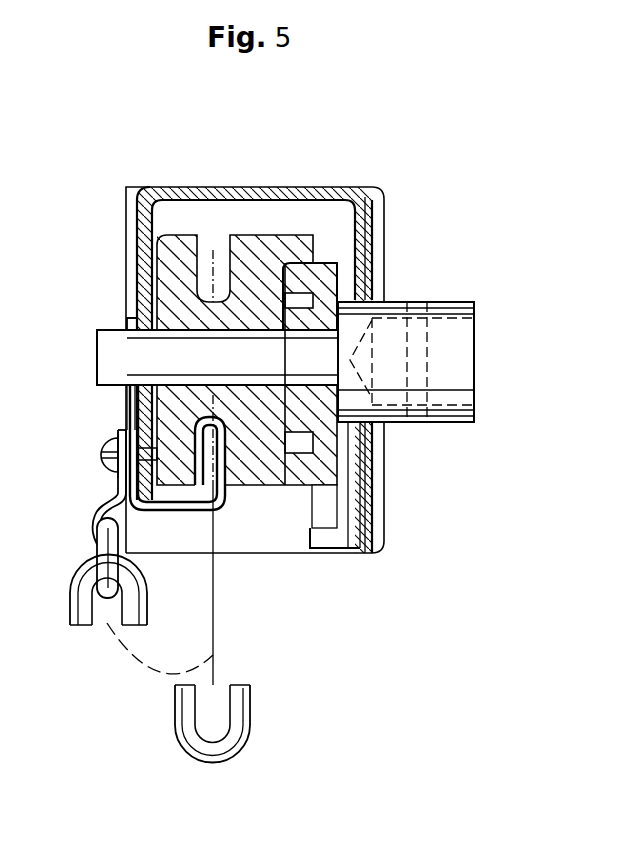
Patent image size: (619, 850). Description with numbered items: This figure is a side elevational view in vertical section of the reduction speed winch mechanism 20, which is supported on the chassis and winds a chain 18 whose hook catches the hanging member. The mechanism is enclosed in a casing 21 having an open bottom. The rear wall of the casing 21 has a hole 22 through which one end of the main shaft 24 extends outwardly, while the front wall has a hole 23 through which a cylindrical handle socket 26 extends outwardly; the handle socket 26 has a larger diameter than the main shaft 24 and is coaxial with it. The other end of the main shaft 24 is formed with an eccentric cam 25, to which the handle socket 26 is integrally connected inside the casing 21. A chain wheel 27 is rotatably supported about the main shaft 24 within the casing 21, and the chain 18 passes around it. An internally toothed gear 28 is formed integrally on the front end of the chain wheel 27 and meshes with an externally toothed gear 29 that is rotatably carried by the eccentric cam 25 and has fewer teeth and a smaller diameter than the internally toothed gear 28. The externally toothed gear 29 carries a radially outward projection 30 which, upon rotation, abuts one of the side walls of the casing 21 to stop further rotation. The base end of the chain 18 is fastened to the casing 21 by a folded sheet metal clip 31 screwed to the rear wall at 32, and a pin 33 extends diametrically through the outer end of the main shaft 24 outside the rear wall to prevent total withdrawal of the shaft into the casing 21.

The chain 18 is at (175, 717).
The reduction speed winch mechanism 20 is at (158, 185).
The casing 21 is at (352, 190).
The hole 22 is at (128, 322).
The hole 23 is at (365, 300).
The main shaft 24 is at (105, 352).
The eccentric cam 25 is at (323, 383).
The cylindrical handle socket 26 is at (474, 330).
The chain wheel 27 is at (165, 247).
The internally toothed gear 28 is at (300, 280).
The externally toothed gear 29 is at (302, 300).
The projection 30 is at (328, 505).
The folded sheet metal clip 31 is at (98, 512).
The screw fastening 32 is at (100, 450).
The pin 33 is at (128, 393).